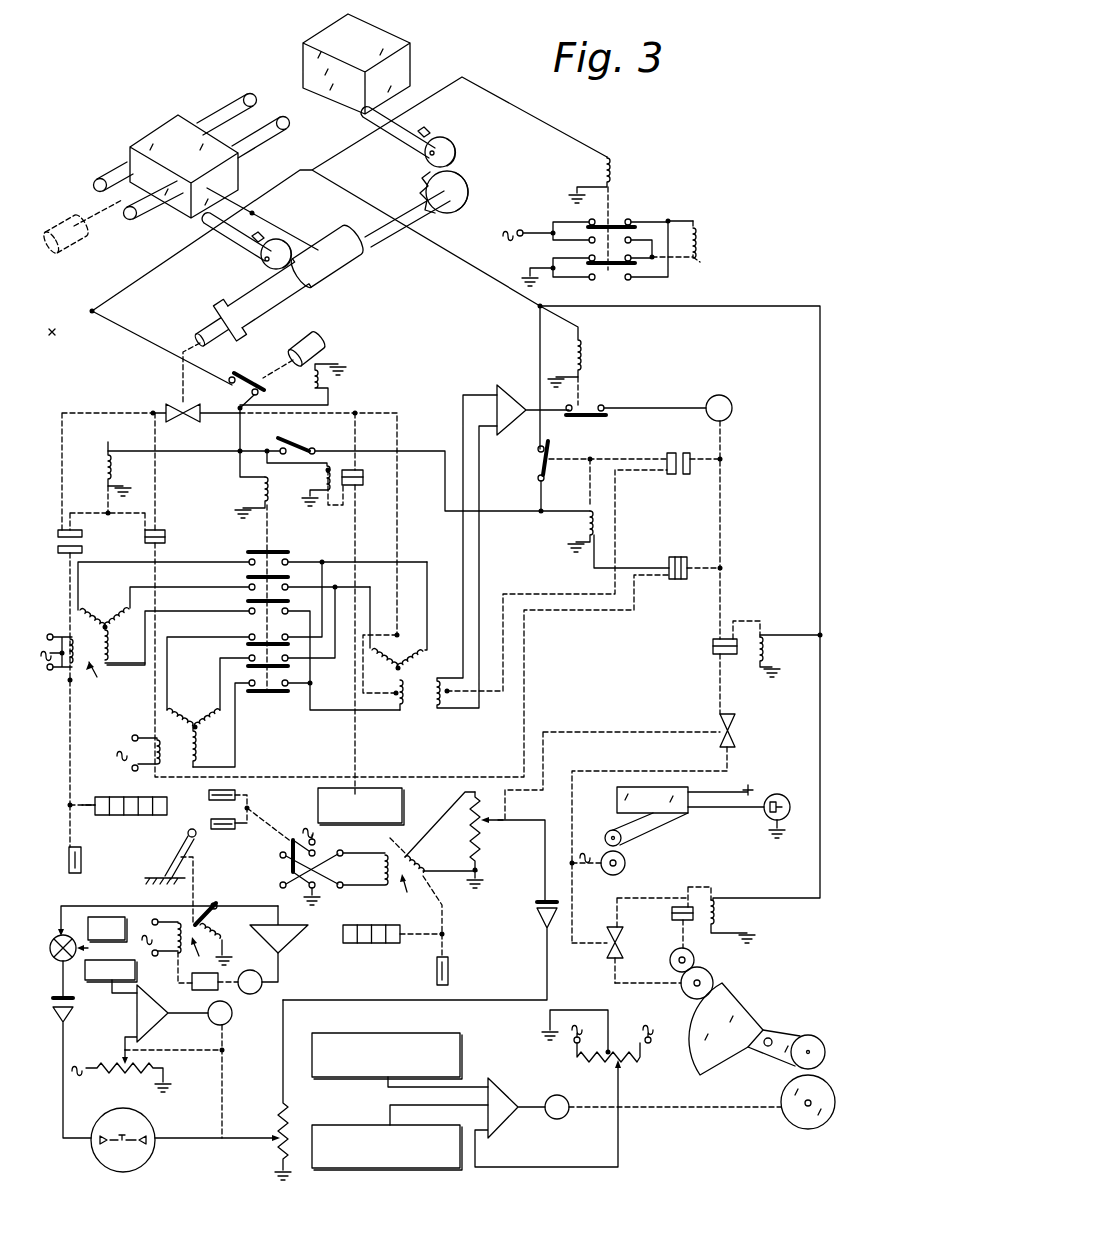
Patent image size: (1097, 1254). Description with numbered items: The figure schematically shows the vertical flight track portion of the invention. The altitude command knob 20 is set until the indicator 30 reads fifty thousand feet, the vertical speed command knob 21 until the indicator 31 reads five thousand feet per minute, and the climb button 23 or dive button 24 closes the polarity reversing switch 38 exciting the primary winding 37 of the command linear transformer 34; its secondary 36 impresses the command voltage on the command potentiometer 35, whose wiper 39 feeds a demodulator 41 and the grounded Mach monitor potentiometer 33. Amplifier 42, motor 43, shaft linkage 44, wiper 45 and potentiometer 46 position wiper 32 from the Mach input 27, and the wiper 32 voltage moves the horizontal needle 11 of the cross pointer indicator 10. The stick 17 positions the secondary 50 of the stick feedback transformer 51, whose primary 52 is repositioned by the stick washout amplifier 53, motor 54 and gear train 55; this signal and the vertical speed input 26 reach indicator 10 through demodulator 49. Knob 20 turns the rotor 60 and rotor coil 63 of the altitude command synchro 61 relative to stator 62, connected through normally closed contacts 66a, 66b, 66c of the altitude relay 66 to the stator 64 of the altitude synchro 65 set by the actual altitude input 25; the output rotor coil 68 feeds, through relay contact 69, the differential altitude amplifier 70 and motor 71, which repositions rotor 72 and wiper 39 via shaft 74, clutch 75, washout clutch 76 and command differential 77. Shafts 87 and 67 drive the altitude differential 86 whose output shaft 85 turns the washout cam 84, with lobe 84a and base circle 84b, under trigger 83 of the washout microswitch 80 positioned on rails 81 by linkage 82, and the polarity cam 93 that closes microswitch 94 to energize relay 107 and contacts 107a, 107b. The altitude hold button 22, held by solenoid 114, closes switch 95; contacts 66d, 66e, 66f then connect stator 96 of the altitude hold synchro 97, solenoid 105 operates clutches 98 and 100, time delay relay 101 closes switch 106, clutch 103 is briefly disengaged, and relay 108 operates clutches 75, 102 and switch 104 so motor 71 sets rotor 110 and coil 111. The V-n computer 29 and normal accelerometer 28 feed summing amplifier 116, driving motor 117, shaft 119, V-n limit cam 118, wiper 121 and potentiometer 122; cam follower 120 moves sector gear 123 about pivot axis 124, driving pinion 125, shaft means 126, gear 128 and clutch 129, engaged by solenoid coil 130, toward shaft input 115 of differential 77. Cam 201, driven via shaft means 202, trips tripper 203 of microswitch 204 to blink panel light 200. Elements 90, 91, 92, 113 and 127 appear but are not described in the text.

The aircraft instrument 10 is at (137, 1137).
The horizontal indicator needle 11 is at (121, 1137).
The control stick 17 is at (188, 834).
The altitude command knob 20 is at (83, 862).
The vertical speed command knob 21 is at (82, 250).
The altitude hold button 22 is at (322, 330).
The climb button 23 is at (209, 795).
The dive button 24 is at (213, 823).
The actual altitude input 25 is at (318, 803).
The actual vertical speed input 26 is at (123, 918).
The Mach number input 27 is at (97, 983).
The normal accelerometer 28 is at (343, 1125).
The V-n computer 29 is at (341, 1033).
The altitude indicator 30 is at (119, 796).
The vertical speed indicator 31 is at (354, 925).
The wiper 32 is at (193, 1141).
The Mach monitor potentiometer 33 is at (278, 1152).
The command linear transformer 34 is at (417, 887).
The command potentiometer 35 is at (483, 862).
The secondary winding 36 is at (419, 866).
The primary winding 37 is at (703, 263).
The polarity reversing switch 38 is at (303, 831).
The wiper 39 is at (505, 830).
The demodulator 41 is at (537, 903).
The amplifier 42 is at (152, 1007).
The motor 43 is at (232, 1013).
The mechanical shaft linkage 44 is at (227, 1106).
The wiper 45 is at (124, 1048).
The potentiometer 46 is at (105, 1076).
The demodulator 49 is at (72, 1018).
The secondary winding 50 is at (219, 931).
The stick feedback linear transformer 51 is at (201, 954).
The primary winding 52 is at (176, 956).
The stick washout amplifier 53 is at (286, 950).
The motor 54 is at (246, 970).
The rated gear train 55 is at (201, 991).
The rotor 60 is at (62, 632).
The altitude command synchro 61 is at (100, 677).
The stator 62 is at (115, 616).
The rotor coil 63 is at (102, 652).
The stator winding 64 is at (393, 671).
The altitude synchro 65 is at (424, 673).
The altitude relay 66 is at (262, 491).
The normally closed contact 66a is at (248, 552).
The normally closed contact 66b is at (248, 577).
The normally closed contact 66c is at (248, 601).
The normally open relay switch 66d is at (248, 640).
The normally open relay switch 66e is at (248, 662).
The normally open relay switch 66f is at (272, 693).
The shaft 67 is at (398, 411).
The output rotor coil 68 is at (437, 710).
The relay contact 69 is at (601, 419).
The differential altitude amplifier 70 is at (502, 393).
The motor 71 is at (731, 398).
The altitude synchro rotor 72 is at (452, 702).
The shaft arrangement 74 is at (723, 457).
The clutch 75 is at (680, 452).
The washout clutch 76 is at (712, 652).
The command differential 77 is at (716, 727).
The washout microswitch 80 is at (185, 152).
The parallel rails 81 is at (260, 103).
The servomechanical linkage 82 is at (112, 222).
The microswitch trigger 83 is at (283, 237).
The washout trigger cam 84 is at (296, 279).
The lobe 84a is at (328, 256).
The base circle 84b is at (250, 293).
The output shaft 85 is at (181, 391).
The altitude mechanical differential 86 is at (166, 408).
The shaft 87 is at (68, 601).
The relay coil 90 is at (586, 358).
The relay coil 91 is at (767, 653).
The gear 92 is at (455, 135).
The altitude polarity cam 93 is at (473, 190).
The microswitch 94 is at (361, 36).
The switch 95 is at (250, 373).
The stator 96 is at (201, 735).
The altitude hold synchro 97 is at (195, 723).
The solenoid-operated clutch 98 is at (84, 536).
The clutch 100 is at (167, 537).
The time delay relay 101 is at (322, 481).
The solenoid-operated clutch 102 is at (679, 557).
The solenoid-operated clutch 103 is at (360, 488).
The switch 104 is at (540, 461).
The solenoid 105 is at (105, 472).
The switch 106 is at (300, 441).
The mechanically held relay 107 is at (615, 167).
The relay contact 107a is at (614, 226).
The relay contact 107b is at (608, 270).
The relay 108 is at (585, 526).
The rotor 110 is at (154, 715).
The coil 111 is at (173, 750).
The valve 113 is at (604, 953).
The solenoid 114 is at (312, 389).
The shaft input 115 is at (574, 906).
The summing amplifier 116 is at (499, 1097).
The motor 117 is at (563, 1118).
The V-n limit cam 118 is at (785, 1117).
The shaft 119 is at (712, 1111).
The cam follower 120 is at (819, 1042).
The wiper 121 is at (621, 1101).
The potentiometer 122 is at (592, 1066).
The V-n sector gear 123 is at (697, 1022).
The pivot axis 124 is at (772, 1038).
The pinion 125 is at (713, 979).
The shaft means 126 is at (604, 984).
The linkage 127 is at (638, 899).
The gear 128 is at (670, 960).
The clutch 129 is at (672, 916).
The solenoid coil 130 is at (718, 916).
The panel light 200 is at (763, 815).
The cam 201 is at (626, 862).
The shaft means 202 is at (605, 840).
The tripper 203 is at (651, 826).
The microswitch 204 is at (665, 808).